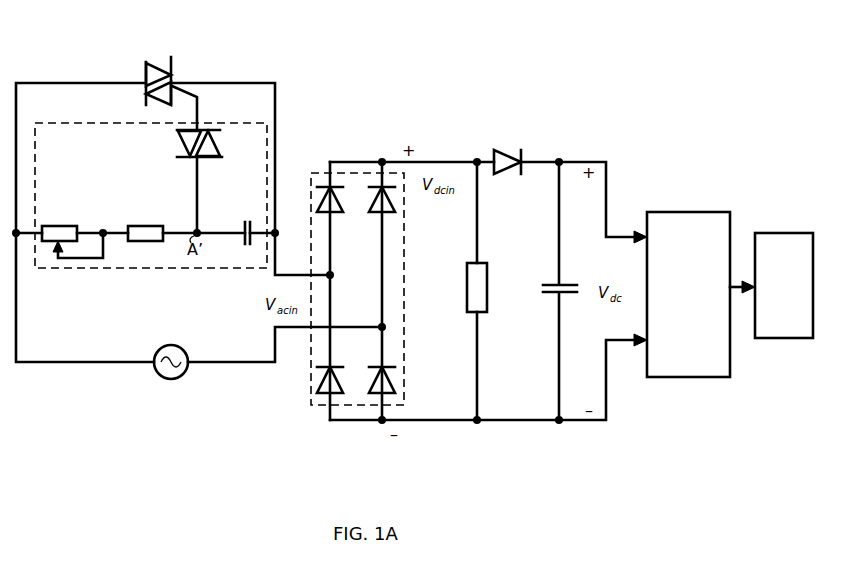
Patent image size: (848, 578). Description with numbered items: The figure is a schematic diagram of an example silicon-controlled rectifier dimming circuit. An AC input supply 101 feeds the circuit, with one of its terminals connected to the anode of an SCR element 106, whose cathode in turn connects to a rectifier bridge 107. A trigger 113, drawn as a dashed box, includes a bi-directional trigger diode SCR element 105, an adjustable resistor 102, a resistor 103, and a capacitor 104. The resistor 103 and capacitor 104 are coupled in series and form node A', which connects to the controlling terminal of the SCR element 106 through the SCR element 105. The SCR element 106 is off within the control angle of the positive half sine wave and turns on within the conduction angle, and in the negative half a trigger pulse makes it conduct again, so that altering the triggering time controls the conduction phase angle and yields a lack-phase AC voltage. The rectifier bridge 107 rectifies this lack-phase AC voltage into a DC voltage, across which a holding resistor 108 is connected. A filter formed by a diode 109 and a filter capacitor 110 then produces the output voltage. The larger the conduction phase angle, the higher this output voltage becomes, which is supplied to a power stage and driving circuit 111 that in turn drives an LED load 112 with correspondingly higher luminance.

The AC input supply 101 is at (184, 351).
The adjustable resistor 102 is at (68, 229).
The resistor 103 is at (150, 229).
The capacitor 104 is at (242, 225).
The SCR element 105 is at (211, 150).
The SCR element 106 is at (163, 74).
The rectifier bridge 107 is at (402, 290).
The holding resistor 108 is at (478, 298).
The diode 109 is at (499, 154).
The filter capacitor 110 is at (545, 289).
The power stage and driving circuit 111 is at (688, 294).
The LED load 112 is at (784, 285).
The trigger 113 is at (93, 146).